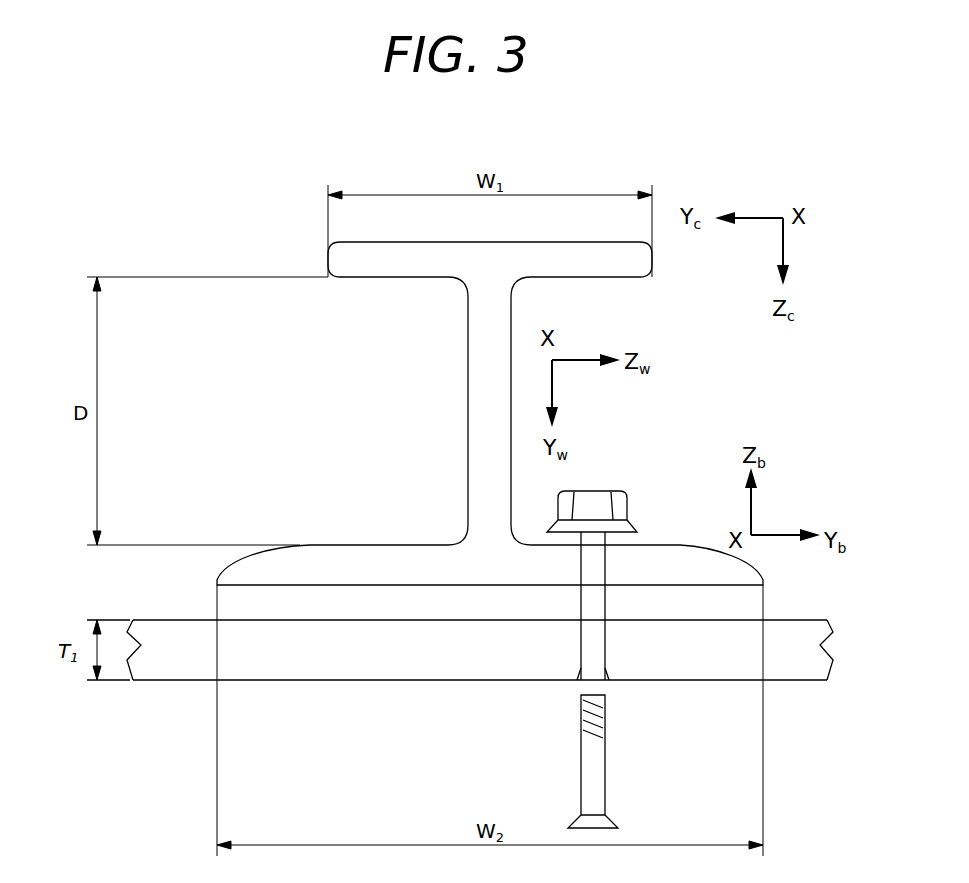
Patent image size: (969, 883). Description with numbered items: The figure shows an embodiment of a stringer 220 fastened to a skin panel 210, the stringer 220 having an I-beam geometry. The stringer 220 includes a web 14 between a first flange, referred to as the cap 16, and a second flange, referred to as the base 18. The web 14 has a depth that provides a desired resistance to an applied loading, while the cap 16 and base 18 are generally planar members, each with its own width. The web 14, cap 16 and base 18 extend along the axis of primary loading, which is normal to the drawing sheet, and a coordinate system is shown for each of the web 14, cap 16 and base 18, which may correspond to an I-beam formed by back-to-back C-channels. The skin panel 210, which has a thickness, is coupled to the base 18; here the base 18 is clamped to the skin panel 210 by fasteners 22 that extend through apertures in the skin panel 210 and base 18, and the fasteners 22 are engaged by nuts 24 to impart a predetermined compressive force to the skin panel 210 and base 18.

The web 14 is at (484, 411).
The cap 16 is at (652, 275).
The base 18 is at (357, 555).
The fasteners 22 is at (596, 773).
The nuts 24 is at (627, 505).
The skin panel 210 is at (790, 625).
The stringer 220 is at (360, 359).